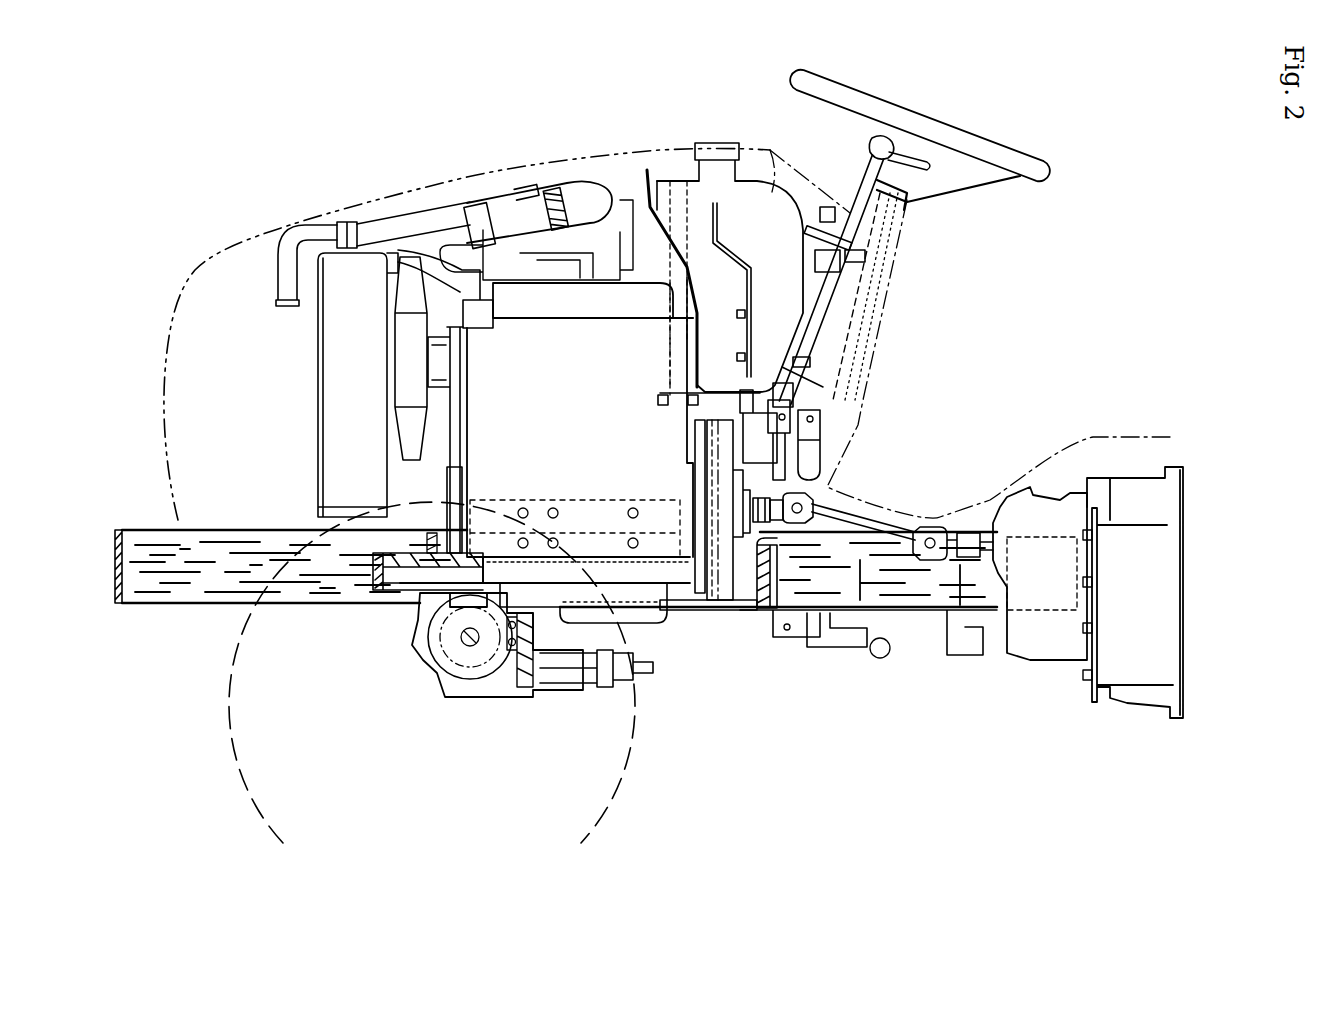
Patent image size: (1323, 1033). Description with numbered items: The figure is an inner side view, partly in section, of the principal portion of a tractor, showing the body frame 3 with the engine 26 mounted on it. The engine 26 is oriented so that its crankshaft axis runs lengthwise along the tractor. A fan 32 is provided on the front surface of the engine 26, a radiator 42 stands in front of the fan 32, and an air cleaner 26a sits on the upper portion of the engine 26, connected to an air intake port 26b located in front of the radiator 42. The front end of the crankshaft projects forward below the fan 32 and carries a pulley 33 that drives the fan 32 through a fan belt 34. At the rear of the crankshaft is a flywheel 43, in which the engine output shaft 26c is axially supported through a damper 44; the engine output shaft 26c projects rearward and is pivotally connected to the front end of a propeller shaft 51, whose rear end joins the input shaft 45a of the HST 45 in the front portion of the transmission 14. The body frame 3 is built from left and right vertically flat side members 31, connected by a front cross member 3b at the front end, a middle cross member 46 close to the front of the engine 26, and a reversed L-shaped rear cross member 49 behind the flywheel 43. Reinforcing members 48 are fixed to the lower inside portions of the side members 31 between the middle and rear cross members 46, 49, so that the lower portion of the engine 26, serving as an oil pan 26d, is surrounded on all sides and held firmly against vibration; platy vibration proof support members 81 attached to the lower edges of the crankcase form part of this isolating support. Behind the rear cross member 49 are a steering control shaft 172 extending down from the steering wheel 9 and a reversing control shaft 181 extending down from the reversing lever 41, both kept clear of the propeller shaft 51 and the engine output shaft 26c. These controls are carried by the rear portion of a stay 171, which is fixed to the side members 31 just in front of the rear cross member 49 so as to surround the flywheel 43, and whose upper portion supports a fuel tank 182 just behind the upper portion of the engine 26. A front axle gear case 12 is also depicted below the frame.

The body frame 3 is at (237, 497).
The front cross member 3b is at (117, 605).
The steering wheel 9 is at (992, 150).
The front axle gear case 12 is at (513, 697).
The transmission 14 is at (1145, 450).
The engine 26 is at (563, 390).
The air cleaner 26a is at (562, 180).
The air intake port 26b is at (283, 287).
The engine output shaft 26c is at (770, 517).
The oil pan 26d is at (663, 625).
The side member 31 is at (230, 573).
The fan 32 is at (405, 272).
The pulley 33 is at (450, 480).
The fan belt 34 is at (463, 422).
The reversing lever 41 is at (870, 148).
The radiator 42 is at (333, 352).
The flywheel 43 is at (723, 590).
The damper 44 is at (764, 500).
The HST 45 is at (1042, 510).
The input shaft 45a is at (953, 527).
The middle cross member 46 is at (361, 620).
The reinforcing member 48 is at (683, 600).
The rear cross member 49 is at (805, 548).
The propeller shaft 51 is at (867, 527).
The vibration proof support member 81 is at (586, 500).
The stay 171 is at (712, 410).
The steering control shaft 172 is at (772, 493).
The reversing control shaft 181 is at (743, 442).
The fuel tank 182 is at (752, 195).